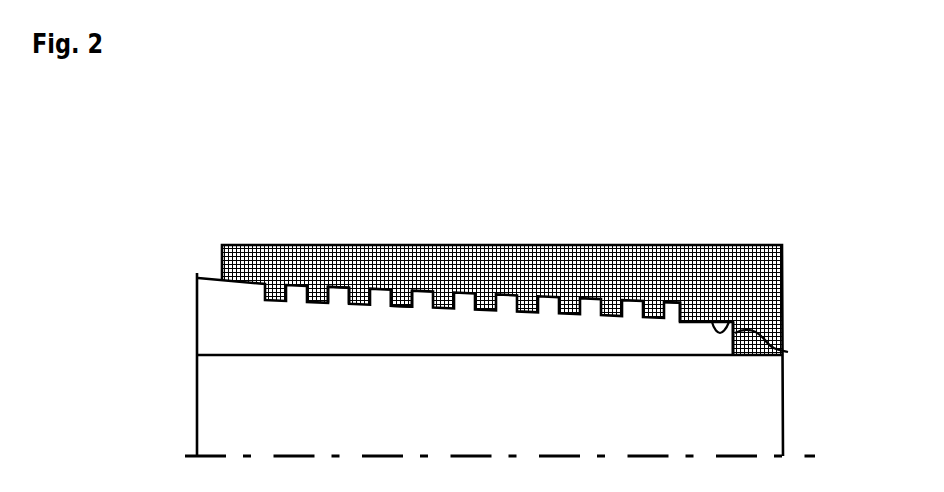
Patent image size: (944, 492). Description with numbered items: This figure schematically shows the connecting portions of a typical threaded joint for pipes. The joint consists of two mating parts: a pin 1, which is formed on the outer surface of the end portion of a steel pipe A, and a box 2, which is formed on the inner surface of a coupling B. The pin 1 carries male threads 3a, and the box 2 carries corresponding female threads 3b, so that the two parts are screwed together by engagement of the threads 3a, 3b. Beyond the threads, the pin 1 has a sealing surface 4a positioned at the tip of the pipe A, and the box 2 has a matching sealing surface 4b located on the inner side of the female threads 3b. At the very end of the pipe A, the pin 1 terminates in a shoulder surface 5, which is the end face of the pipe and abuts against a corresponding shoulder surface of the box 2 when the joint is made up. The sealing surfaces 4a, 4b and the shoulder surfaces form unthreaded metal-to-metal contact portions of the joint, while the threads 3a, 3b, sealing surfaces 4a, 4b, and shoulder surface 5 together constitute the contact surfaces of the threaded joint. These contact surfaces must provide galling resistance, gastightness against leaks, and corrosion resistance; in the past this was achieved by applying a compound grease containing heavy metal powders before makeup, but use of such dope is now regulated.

The pin 1 is at (181, 321).
The box 2 is at (619, 206).
The male threads 3a is at (344, 288).
The female threads 3b is at (400, 310).
The sealing surface 4a is at (697, 318).
The sealing surface 4b is at (734, 322).
The shoulder surface 5 is at (788, 352).
The steel pipe A is at (239, 431).
The coupling B is at (489, 110).